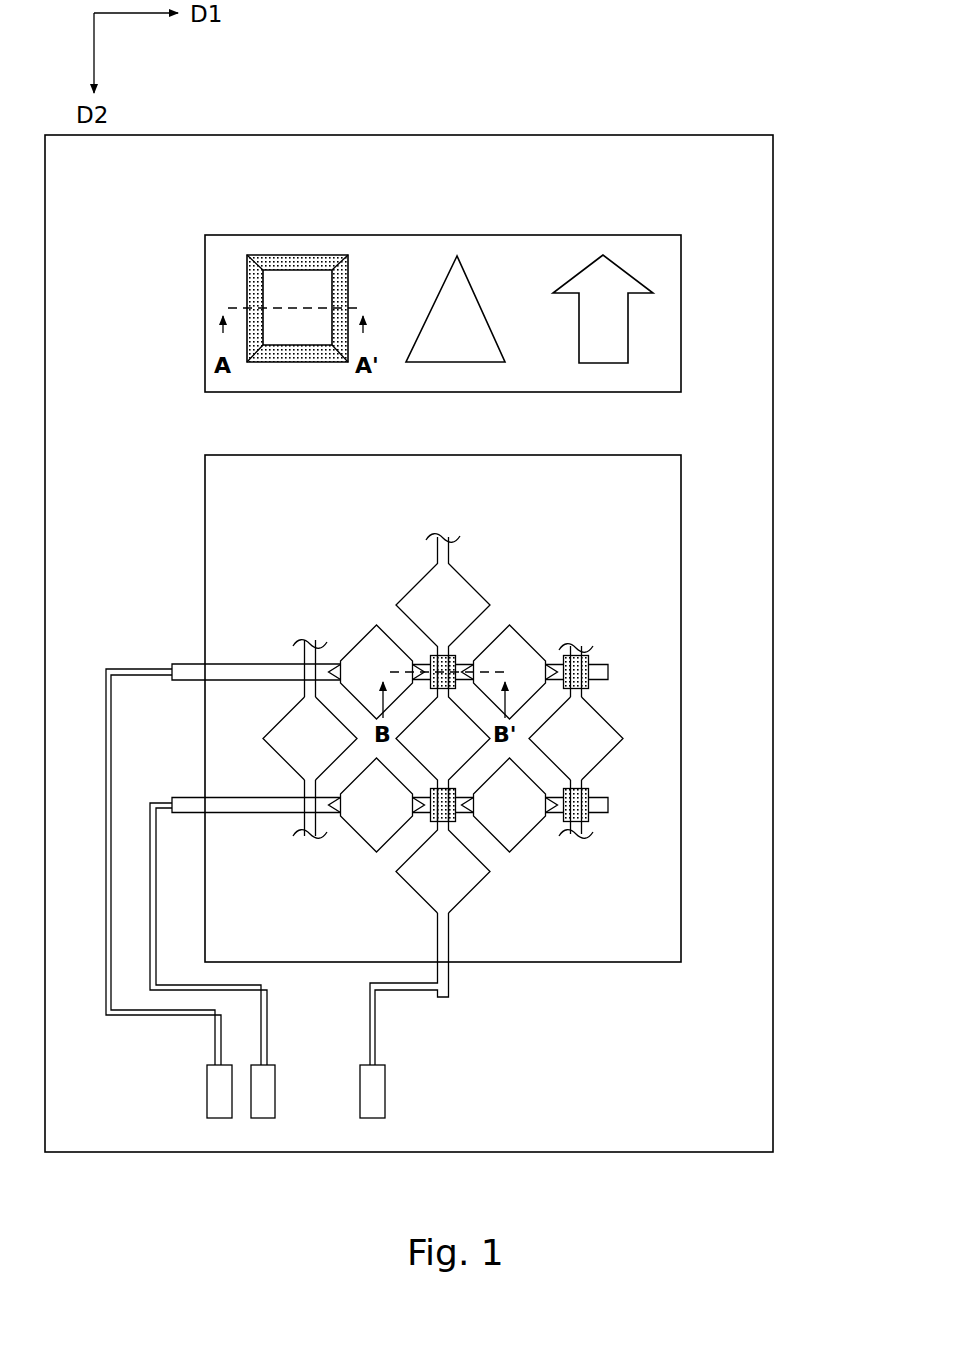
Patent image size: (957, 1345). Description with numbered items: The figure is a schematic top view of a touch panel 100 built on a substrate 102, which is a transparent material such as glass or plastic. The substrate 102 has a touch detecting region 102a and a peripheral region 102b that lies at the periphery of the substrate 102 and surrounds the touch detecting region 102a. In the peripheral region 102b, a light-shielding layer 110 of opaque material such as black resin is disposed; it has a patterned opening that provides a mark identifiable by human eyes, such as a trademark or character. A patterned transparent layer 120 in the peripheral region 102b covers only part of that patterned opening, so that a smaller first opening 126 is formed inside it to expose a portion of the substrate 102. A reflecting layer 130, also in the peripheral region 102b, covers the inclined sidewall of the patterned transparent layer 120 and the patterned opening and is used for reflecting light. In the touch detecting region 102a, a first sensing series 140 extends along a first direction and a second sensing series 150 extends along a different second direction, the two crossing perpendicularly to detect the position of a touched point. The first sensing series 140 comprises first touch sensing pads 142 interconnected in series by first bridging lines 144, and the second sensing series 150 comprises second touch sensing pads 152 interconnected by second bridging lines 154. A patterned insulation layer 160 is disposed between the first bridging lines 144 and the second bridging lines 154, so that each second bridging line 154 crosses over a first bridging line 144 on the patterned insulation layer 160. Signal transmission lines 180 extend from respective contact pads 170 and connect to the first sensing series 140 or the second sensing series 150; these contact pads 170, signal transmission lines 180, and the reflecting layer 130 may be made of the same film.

The touch panel 100 is at (445, 92).
The light-shielding layer 110 is at (747, 327).
The patterned transparent layer 120 is at (300, 363).
The first opening 126 is at (297, 286).
The reflecting layer 130 is at (558, 367).
The substrate 102 is at (848, 512).
The touch detecting region 102a is at (658, 531).
The peripheral region 102b is at (716, 575).
The first sensing series 140 is at (608, 670).
The first touch sensing pads 142 is at (350, 648).
The first bridging lines 144 is at (457, 657).
The second sensing series 150 is at (441, 535).
The second touch sensing pads 152 is at (463, 613).
The second bridging lines 154 is at (428, 652).
The patterned insulation layer 160 is at (458, 820).
The contact pads 170 is at (222, 1107).
The signal transmission lines 180 is at (125, 665).